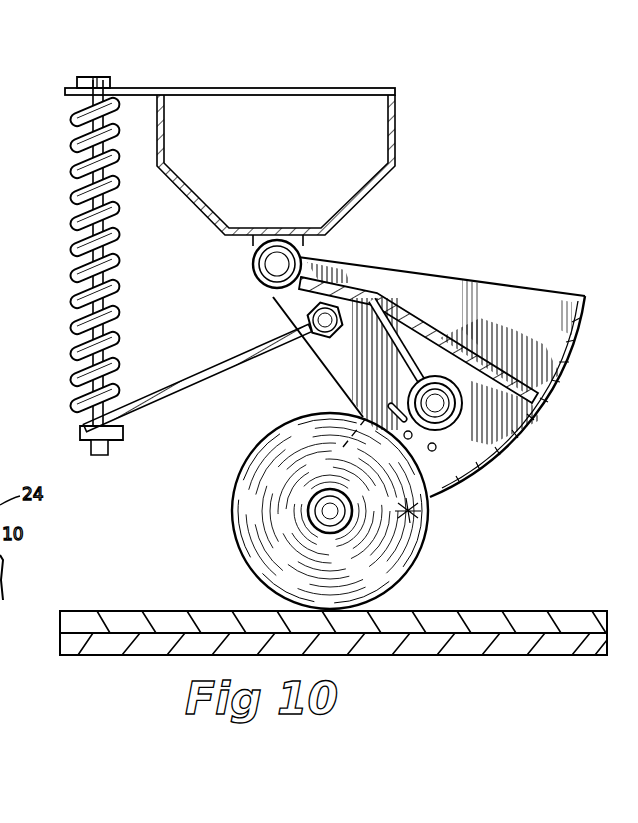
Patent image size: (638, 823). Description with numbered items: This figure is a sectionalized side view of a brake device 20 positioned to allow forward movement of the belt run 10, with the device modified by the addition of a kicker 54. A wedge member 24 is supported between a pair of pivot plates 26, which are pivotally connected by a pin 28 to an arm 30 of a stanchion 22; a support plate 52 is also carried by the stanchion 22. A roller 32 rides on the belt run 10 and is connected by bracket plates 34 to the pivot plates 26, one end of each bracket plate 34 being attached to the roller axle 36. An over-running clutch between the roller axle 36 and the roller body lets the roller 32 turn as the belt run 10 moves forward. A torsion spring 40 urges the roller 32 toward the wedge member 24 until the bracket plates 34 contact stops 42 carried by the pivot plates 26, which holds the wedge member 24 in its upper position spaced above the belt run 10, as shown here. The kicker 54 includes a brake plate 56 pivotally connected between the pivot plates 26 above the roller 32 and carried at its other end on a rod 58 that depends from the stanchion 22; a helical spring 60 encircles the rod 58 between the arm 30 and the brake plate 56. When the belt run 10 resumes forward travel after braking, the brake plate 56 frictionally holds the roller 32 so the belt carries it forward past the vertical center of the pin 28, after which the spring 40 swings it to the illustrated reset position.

The belt run 10 is at (541, 610).
The brake device 20 is at (450, 256).
The stanchion 22 is at (356, 74).
The wedge member 24 is at (566, 376).
The pivot plates 26 is at (528, 296).
The pin 28 is at (262, 268).
The arm 30 is at (398, 128).
The roller 32 is at (280, 568).
The bracket plates 34 is at (440, 442).
The roller axle 36 is at (318, 504).
The spring 40 is at (392, 338).
The stops 42 is at (420, 512).
The support plate 52 is at (110, 656).
The kicker 54 is at (160, 366).
The brake plate 56 is at (262, 362).
The rod 58 is at (90, 290).
The helical spring 60 is at (76, 196).